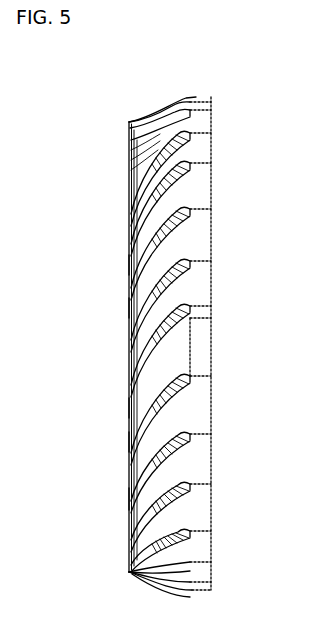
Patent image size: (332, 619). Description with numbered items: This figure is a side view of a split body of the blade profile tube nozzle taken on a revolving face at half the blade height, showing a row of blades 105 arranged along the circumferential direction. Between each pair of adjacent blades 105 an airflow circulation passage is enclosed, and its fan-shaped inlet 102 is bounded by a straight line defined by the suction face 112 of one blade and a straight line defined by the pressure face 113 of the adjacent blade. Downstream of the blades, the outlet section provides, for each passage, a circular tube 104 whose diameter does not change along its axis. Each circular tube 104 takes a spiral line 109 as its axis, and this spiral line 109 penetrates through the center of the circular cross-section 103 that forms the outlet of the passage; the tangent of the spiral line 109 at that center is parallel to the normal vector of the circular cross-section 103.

The inlet 102 is at (192, 348).
The blade 105 is at (178, 301).
The suction face 112 is at (150, 264).
The pressure face 113 is at (128, 308).
The circular cross-section 103 is at (128, 407).
The circular tube 104 is at (128, 441).
The spiral line 109 is at (115, 506).